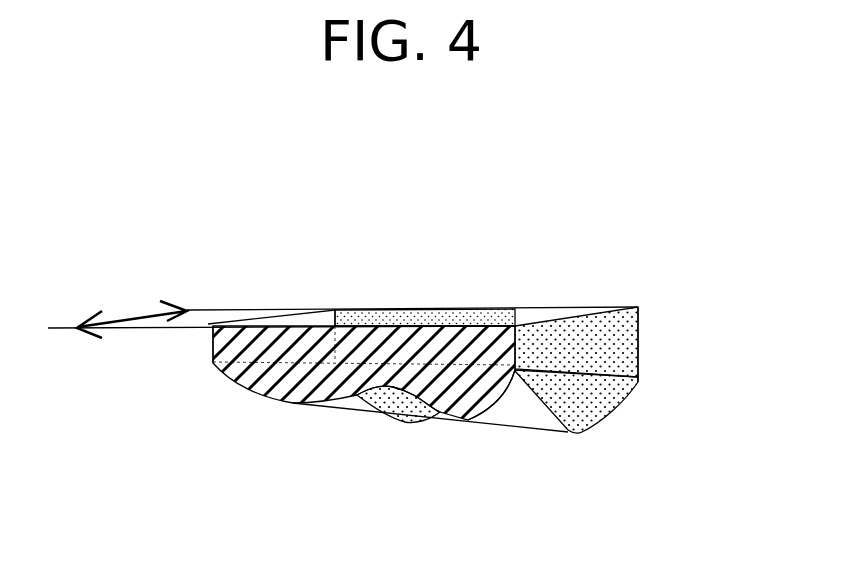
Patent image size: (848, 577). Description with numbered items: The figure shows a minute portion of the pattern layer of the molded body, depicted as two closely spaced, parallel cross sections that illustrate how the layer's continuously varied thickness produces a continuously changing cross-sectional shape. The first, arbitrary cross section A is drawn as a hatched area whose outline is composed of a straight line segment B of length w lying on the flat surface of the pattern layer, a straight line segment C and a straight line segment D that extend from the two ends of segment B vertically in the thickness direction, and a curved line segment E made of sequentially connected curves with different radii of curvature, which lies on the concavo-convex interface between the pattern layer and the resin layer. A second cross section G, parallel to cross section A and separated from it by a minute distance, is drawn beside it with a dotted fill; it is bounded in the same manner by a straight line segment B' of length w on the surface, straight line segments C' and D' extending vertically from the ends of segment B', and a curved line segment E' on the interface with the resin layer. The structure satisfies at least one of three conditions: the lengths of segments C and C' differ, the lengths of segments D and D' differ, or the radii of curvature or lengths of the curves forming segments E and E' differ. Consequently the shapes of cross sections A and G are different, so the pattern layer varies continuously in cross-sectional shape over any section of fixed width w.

The cross section A is at (287, 388).
The straight line segment B is at (425, 225).
The straight line segment B' is at (412, 263).
The straight line segment C is at (281, 383).
The straight line segment C' is at (300, 250).
The straight line segment D is at (507, 442).
The straight line segment D' is at (652, 305).
The curved line segment E is at (366, 465).
The curved line segment E' is at (639, 420).
The cross section G is at (602, 345).